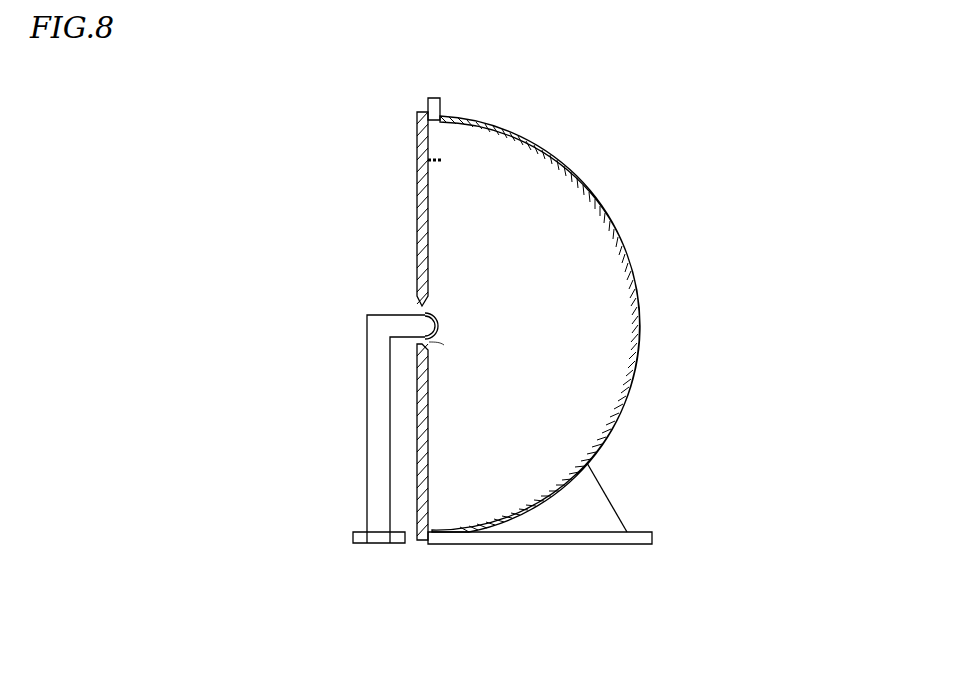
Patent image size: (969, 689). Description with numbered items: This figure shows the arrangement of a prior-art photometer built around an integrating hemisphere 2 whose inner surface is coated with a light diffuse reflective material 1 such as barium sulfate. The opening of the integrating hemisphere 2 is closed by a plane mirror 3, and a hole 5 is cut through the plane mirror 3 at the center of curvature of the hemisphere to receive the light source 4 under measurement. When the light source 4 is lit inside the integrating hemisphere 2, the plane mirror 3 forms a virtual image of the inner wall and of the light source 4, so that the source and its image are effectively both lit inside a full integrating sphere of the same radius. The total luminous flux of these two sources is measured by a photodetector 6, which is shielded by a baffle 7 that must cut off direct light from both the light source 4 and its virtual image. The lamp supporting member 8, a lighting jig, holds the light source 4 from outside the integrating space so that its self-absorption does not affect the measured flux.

The light diffuse reflective material 1 is at (583, 192).
The integrating hemisphere 2 is at (583, 190).
The plane mirror 3 is at (429, 269).
The light source under measurement 4 is at (439, 318).
The hole 5 is at (432, 345).
The photodetector 6 is at (436, 98).
The baffle 7 is at (445, 161).
The lamp supporting member 8 is at (396, 315).